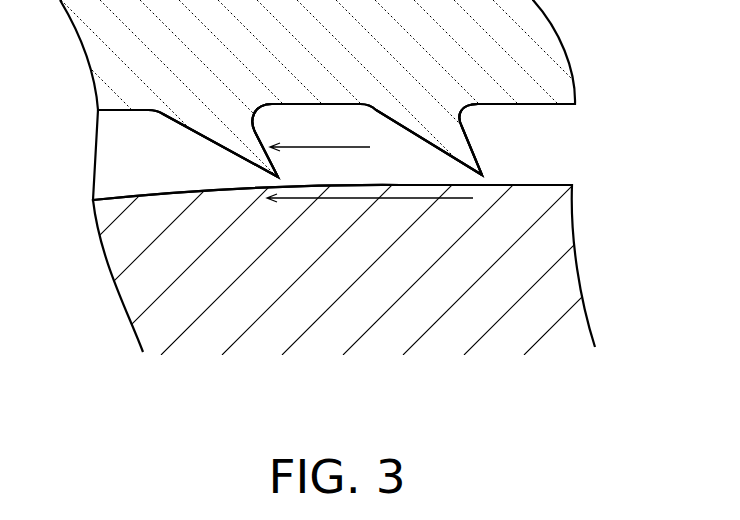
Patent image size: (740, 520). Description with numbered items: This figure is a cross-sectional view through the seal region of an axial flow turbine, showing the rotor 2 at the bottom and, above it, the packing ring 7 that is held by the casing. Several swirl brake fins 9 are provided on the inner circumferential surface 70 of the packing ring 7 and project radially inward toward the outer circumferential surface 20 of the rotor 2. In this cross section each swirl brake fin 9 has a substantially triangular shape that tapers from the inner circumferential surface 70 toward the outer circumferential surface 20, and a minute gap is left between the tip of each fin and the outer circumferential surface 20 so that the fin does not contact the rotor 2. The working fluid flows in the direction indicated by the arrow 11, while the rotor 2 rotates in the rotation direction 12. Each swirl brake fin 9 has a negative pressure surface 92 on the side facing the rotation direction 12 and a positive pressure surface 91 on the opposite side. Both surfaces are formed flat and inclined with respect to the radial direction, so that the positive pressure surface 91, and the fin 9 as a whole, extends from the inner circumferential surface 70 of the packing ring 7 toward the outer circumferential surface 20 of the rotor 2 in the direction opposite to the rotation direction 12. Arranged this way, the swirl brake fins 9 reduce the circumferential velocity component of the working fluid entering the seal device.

The rotor 2 is at (545, 282).
The packing ring 7 is at (528, 30).
The swirl brake fin 9 is at (235, 138).
The positive pressure surface 91 is at (254, 128).
The negative pressure surface 92 is at (242, 162).
The inner circumferential surface 70 is at (141, 111).
The outer circumferential surface 20 is at (138, 198).
The working fluid flow direction 11 is at (294, 148).
The rotation direction 12 is at (368, 200).